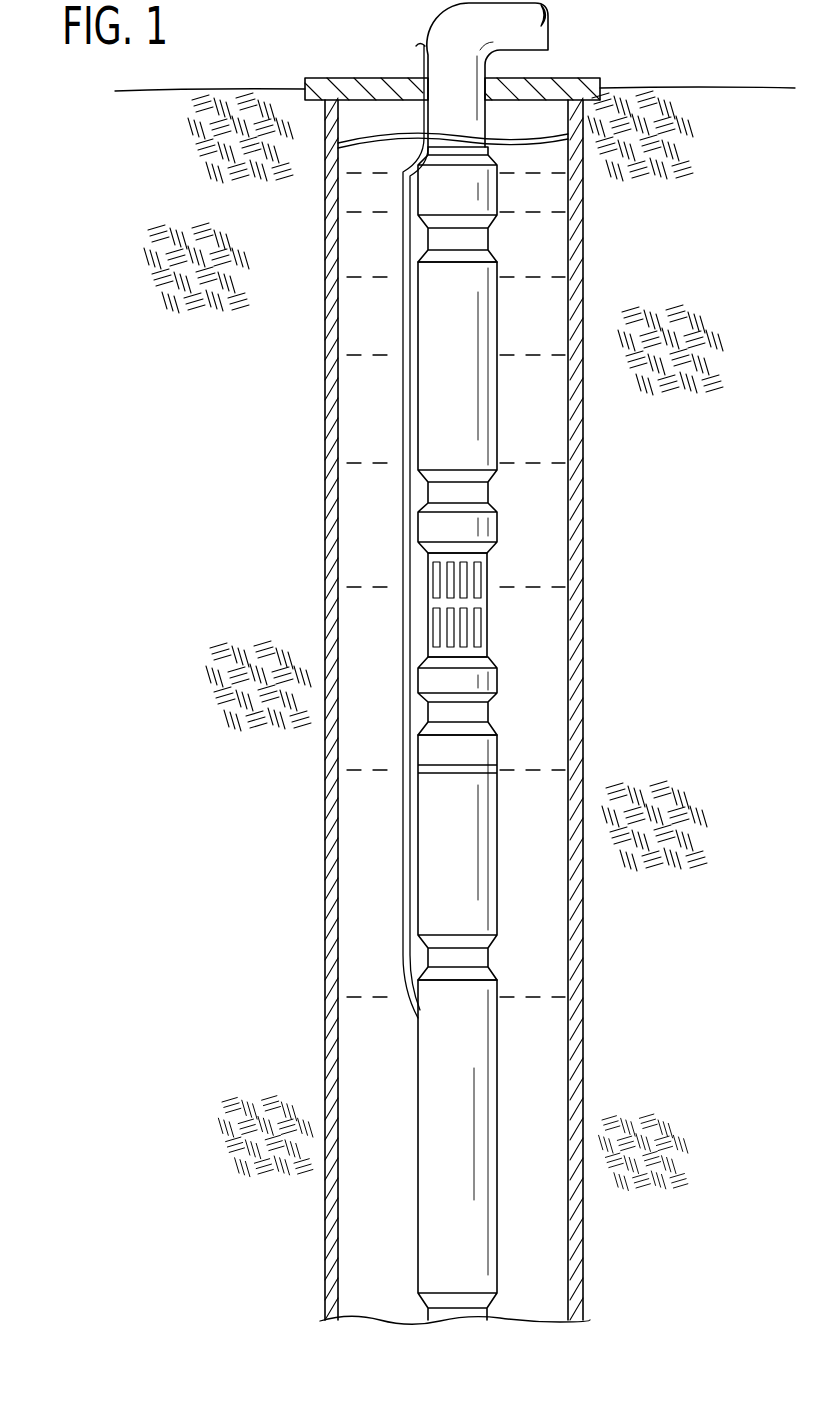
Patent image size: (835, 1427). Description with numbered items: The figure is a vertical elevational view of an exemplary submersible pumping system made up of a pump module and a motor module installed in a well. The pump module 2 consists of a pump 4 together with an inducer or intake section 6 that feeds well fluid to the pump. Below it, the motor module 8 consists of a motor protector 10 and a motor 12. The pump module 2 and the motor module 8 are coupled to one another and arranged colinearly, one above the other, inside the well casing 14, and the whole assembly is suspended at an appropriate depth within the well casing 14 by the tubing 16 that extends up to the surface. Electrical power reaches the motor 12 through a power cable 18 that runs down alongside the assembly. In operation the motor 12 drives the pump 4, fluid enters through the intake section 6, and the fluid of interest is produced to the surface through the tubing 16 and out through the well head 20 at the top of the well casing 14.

The pump module 2 is at (461, 441).
The pump 4 is at (455, 322).
The intake section 6 is at (425, 605).
The motor module 8 is at (464, 1027).
The motor protector 10 is at (468, 814).
The motor 12 is at (432, 1150).
The well casing 14 is at (583, 1042).
The tubing 16 is at (455, 70).
The power cable 18 is at (402, 258).
The well head 20 is at (553, 88).